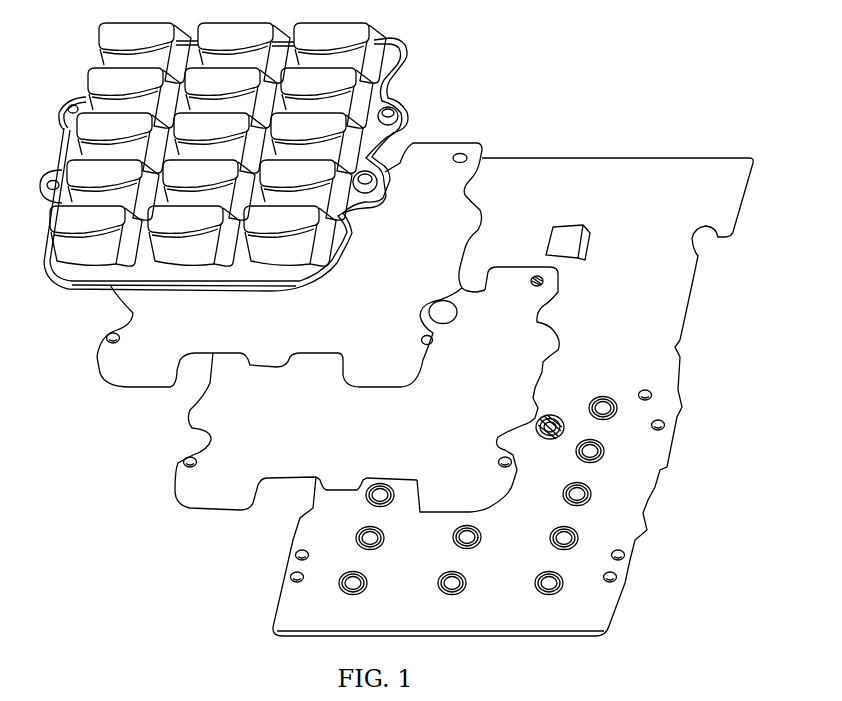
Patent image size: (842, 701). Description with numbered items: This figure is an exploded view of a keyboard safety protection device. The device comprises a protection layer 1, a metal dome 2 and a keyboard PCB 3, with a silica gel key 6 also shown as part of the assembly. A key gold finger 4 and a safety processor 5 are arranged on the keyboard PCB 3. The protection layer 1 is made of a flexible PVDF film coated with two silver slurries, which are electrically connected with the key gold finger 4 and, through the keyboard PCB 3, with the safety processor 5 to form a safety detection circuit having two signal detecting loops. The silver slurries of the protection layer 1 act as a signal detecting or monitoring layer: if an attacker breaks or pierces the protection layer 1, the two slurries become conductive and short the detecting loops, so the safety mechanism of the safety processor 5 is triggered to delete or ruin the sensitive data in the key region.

The protection layer 1 is at (422, 163).
The metal dome 2 is at (528, 312).
The keyboard PCB 3 is at (648, 341).
The key gold finger 4 is at (592, 449).
The safety processor 5 is at (572, 237).
The silica gel key 6 is at (366, 57).